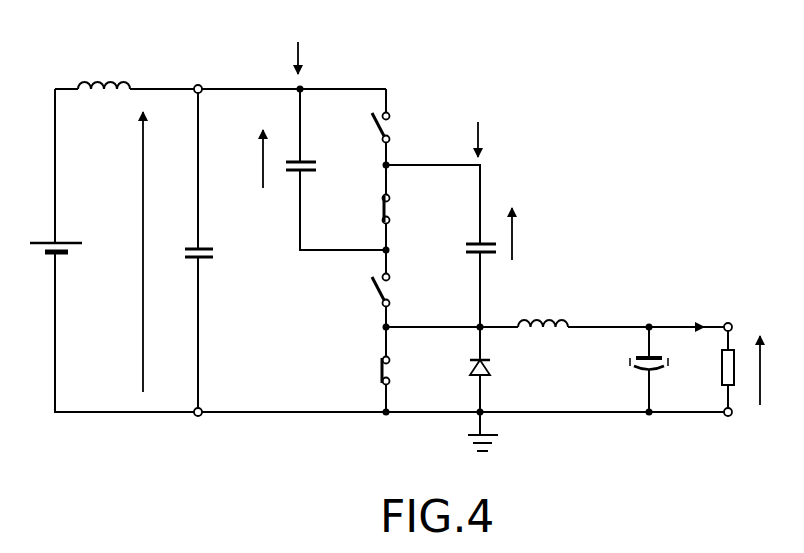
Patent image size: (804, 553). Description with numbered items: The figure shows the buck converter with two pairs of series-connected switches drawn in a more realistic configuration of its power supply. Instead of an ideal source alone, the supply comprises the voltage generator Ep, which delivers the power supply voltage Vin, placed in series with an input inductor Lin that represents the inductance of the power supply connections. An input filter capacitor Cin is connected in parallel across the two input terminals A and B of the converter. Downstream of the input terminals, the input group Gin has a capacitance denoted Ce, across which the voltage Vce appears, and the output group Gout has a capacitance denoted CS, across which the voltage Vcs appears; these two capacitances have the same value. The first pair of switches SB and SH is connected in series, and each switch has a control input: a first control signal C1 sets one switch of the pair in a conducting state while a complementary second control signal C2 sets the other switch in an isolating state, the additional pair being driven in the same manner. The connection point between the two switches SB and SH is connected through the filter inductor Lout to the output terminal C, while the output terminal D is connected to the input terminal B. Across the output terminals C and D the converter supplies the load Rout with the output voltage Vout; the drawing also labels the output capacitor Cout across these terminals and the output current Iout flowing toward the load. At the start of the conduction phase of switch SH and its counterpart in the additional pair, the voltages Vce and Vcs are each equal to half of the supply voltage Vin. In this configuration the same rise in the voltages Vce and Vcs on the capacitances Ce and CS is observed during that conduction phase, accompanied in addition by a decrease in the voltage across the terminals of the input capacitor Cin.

The input inductor Lin is at (109, 82).
The input terminal A is at (197, 85).
The input terminal B is at (194, 416).
The voltage generator Ep is at (44, 238).
The power supply voltage Vin is at (124, 252).
The input filter capacitor Cin is at (193, 245).
The input group Gin is at (292, 48).
The input capacitance Ce is at (296, 176).
The voltage across the input capacitance Vce is at (245, 159).
The switch SH is at (376, 300).
The switch SB is at (378, 374).
The first control signal C1 is at (400, 127).
The second control signal C2 is at (400, 207).
The output group Gout is at (478, 129).
The output capacitance CS is at (490, 258).
The voltage across the output capacitance Vcs is at (529, 234).
The output terminal D is at (493, 362).
The filter inductor Lout is at (552, 319).
The output current Iout is at (692, 322).
The output terminal C is at (730, 322).
The output capacitor Cout is at (640, 373).
The load Rout is at (721, 373).
The output voltage Vout is at (782, 370).